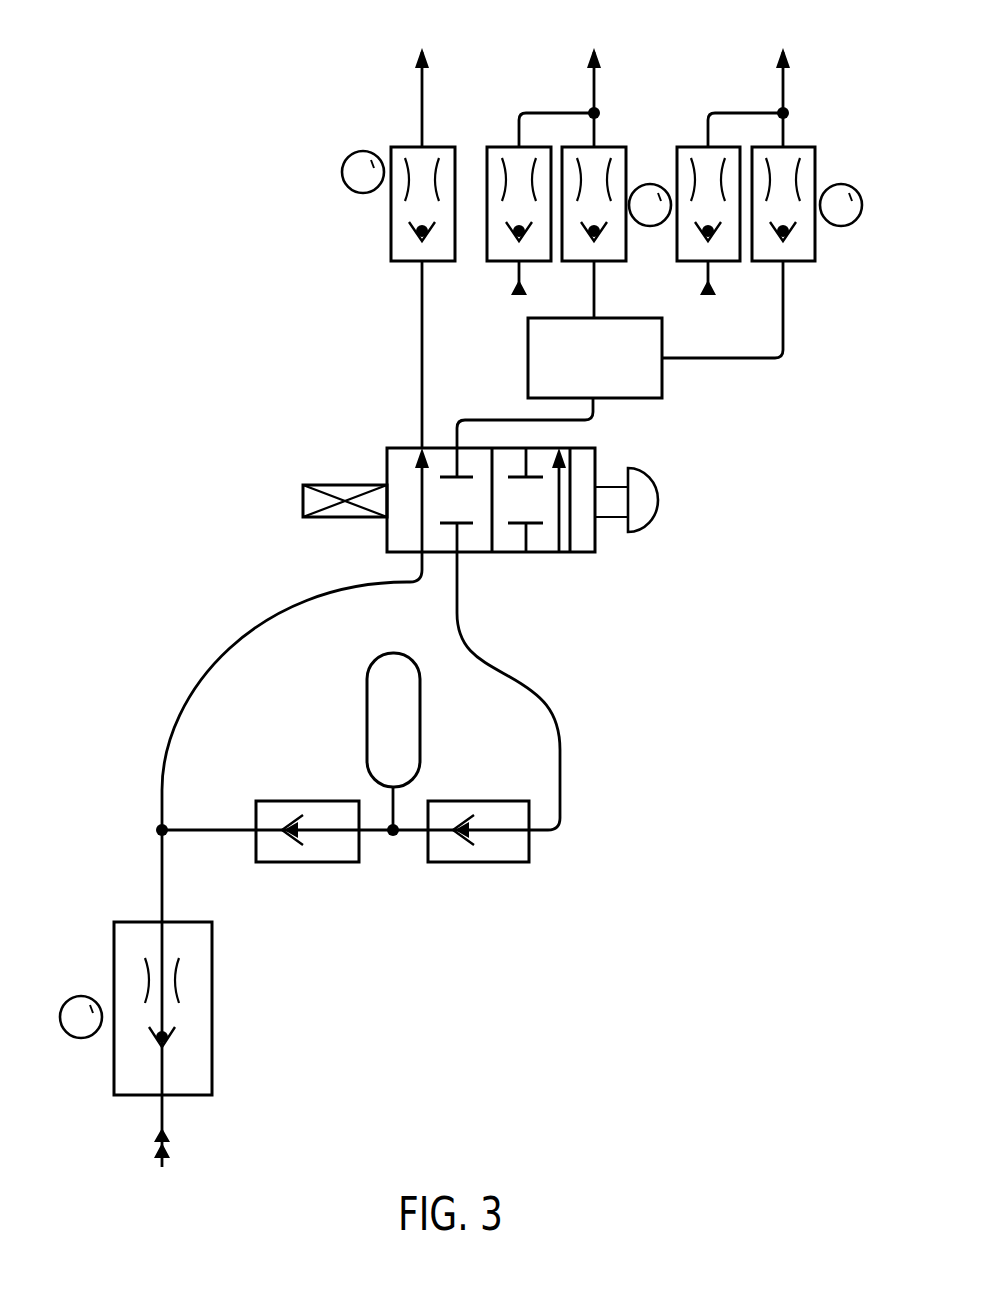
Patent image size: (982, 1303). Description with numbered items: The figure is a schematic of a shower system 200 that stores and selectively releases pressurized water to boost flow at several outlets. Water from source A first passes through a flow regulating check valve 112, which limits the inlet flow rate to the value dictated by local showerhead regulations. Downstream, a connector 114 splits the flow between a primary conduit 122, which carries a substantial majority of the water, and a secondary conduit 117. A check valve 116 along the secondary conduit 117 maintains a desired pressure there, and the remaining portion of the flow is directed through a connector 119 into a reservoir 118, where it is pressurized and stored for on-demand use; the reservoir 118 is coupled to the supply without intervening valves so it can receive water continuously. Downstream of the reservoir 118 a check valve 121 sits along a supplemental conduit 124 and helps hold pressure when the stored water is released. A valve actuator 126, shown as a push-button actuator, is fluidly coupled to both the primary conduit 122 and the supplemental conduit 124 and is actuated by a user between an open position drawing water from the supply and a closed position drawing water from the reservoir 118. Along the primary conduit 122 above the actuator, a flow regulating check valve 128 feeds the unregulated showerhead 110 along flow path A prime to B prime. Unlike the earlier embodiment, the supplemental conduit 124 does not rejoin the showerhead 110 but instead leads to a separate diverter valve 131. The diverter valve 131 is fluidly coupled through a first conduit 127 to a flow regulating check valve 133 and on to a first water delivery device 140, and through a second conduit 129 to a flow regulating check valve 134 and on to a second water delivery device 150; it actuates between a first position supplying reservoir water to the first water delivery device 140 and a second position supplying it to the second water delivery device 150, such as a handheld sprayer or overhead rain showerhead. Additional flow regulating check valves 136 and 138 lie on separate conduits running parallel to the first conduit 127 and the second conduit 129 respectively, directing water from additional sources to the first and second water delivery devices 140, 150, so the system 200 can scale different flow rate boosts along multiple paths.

The shower system 200 is at (247, 122).
The showerhead 110 is at (426, 56).
The first water delivery device 140 is at (598, 56).
The second water delivery device 150 is at (787, 56).
The flow regulating check valve 112 is at (212, 1005).
The connector 114 is at (160, 832).
The check valve 116 is at (303, 862).
The secondary conduit 117 is at (216, 830).
The reservoir 118 is at (367, 715).
The connector 119 is at (393, 834).
The check valve 121 is at (478, 862).
The primary conduit 122 is at (422, 348).
The supplemental conduit 124 is at (583, 420).
The valve actuator 126 is at (595, 538).
The first conduit 127 is at (594, 288).
The flow regulating check valve 128 is at (391, 203).
The second conduit 129 is at (783, 300).
The diverter valve 131 is at (662, 378).
The flow regulating check valve 133 is at (627, 166).
The flow regulating check valve 134 is at (815, 166).
The flow regulating check valve 136 is at (487, 161).
The flow regulating check valve 138 is at (677, 262).